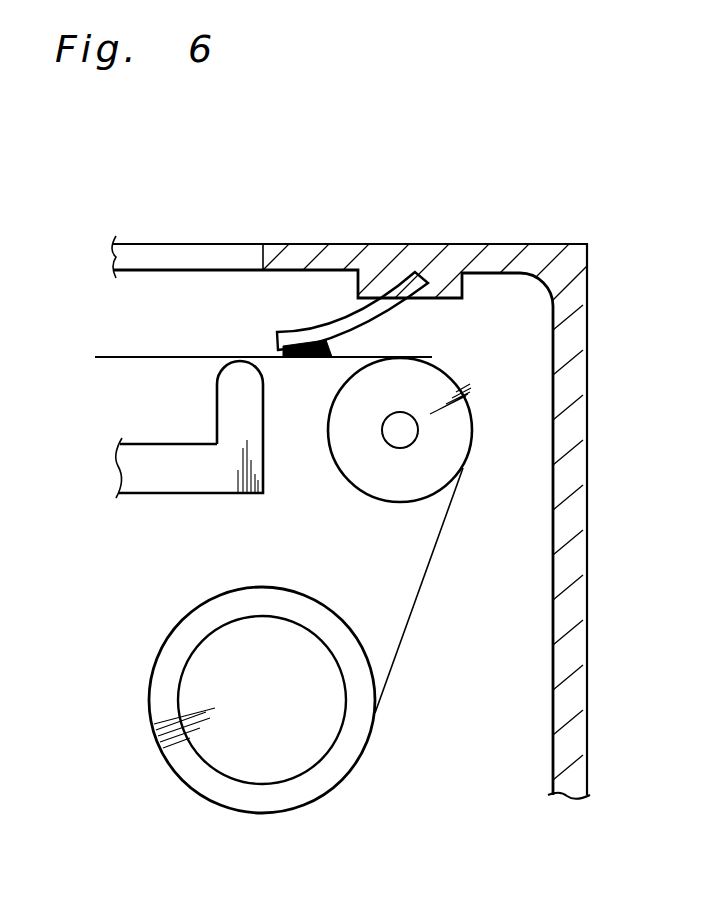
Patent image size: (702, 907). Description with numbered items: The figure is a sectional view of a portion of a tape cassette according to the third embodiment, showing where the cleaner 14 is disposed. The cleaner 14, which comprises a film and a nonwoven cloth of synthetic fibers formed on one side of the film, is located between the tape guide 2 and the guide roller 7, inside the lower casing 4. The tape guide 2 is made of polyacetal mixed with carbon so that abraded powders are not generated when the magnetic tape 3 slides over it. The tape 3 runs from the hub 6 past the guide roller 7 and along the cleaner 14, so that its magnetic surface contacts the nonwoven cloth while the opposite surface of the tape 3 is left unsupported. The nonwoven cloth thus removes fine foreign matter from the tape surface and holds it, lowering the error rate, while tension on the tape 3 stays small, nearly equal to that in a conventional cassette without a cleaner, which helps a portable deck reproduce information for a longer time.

The tape guide 2 is at (140, 482).
The magnetic tape 3 is at (138, 357).
The lower casing 4 is at (523, 258).
The hub 6 is at (183, 767).
The guide roller 7 is at (363, 473).
The cleaner 14 is at (295, 333).